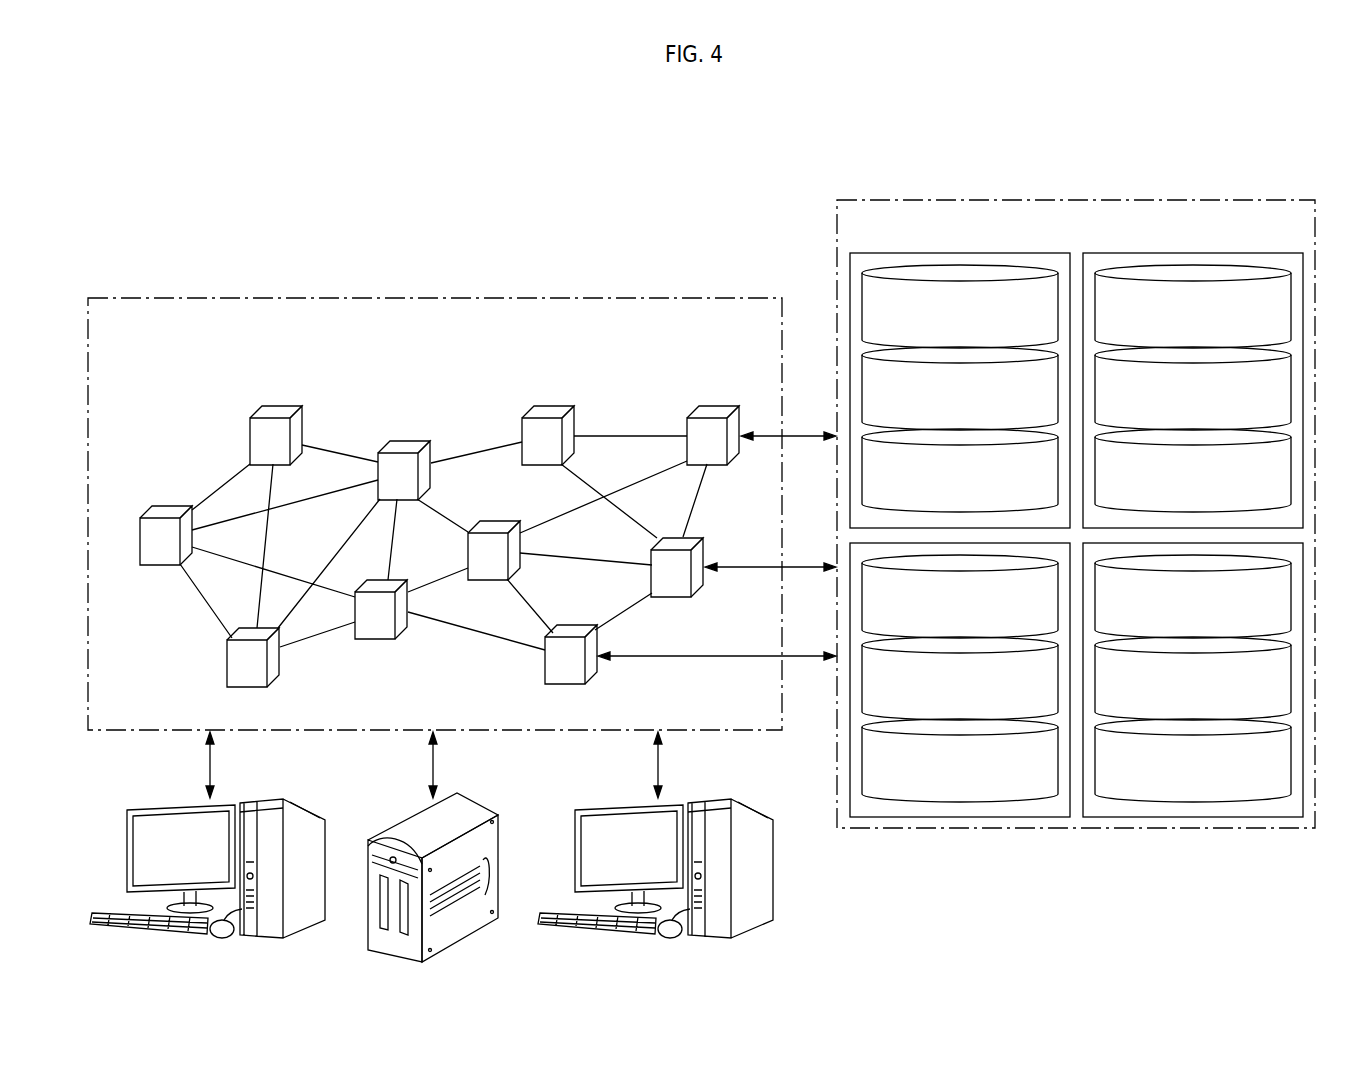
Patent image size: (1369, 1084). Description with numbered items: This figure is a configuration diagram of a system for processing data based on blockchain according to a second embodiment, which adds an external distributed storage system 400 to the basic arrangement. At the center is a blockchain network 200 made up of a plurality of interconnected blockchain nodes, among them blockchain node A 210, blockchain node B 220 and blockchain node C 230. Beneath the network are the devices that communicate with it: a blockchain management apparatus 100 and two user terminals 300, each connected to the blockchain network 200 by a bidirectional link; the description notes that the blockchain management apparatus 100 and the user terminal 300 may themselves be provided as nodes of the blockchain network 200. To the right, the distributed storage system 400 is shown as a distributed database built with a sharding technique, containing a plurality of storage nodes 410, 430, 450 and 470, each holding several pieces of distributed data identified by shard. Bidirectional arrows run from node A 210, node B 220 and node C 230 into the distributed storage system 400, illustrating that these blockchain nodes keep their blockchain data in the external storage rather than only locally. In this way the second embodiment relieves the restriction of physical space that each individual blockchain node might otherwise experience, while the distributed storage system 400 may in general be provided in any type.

The blockchain management apparatus 100 is at (472, 800).
The blockchain network 200 is at (435, 514).
The blockchain node A 210 is at (718, 407).
The blockchain node B 220 is at (702, 539).
The blockchain node C 230 is at (589, 681).
The user terminal 300 is at (287, 805).
The distributed storage system 400 is at (1076, 518).
The storage node 410 is at (857, 253).
The storage node 430 is at (1295, 253).
The storage node 450 is at (884, 818).
The storage node 470 is at (1270, 818).